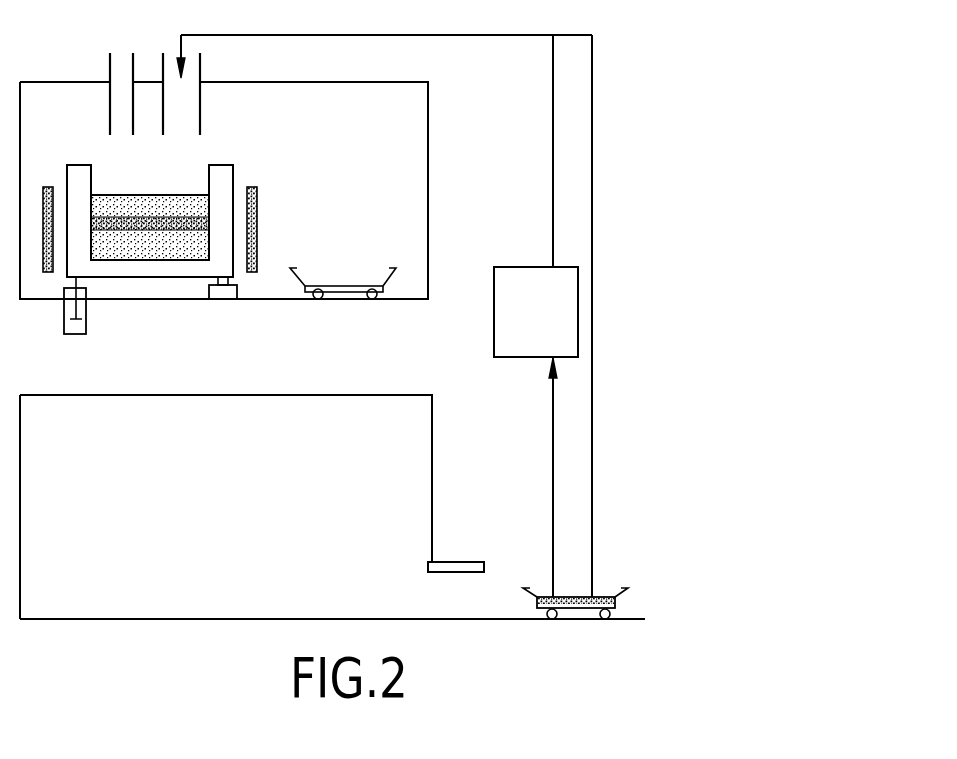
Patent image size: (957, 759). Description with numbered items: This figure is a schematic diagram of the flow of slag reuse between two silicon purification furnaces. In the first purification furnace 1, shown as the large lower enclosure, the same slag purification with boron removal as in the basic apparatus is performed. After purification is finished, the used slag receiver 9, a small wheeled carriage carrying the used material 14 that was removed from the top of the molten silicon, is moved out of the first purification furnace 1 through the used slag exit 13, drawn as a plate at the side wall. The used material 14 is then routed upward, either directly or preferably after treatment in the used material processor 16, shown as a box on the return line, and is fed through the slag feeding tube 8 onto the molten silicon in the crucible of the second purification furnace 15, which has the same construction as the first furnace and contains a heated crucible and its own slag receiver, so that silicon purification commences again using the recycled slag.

The purification furnace 1 is at (310, 395).
The slag feeding tube 8 is at (200, 103).
The used slag receiver 9 is at (532, 605).
The used slag exit 13 is at (463, 561).
The used material 14 is at (600, 596).
The second purification furnace 15 is at (428, 117).
The used material processor 16 is at (494, 335).